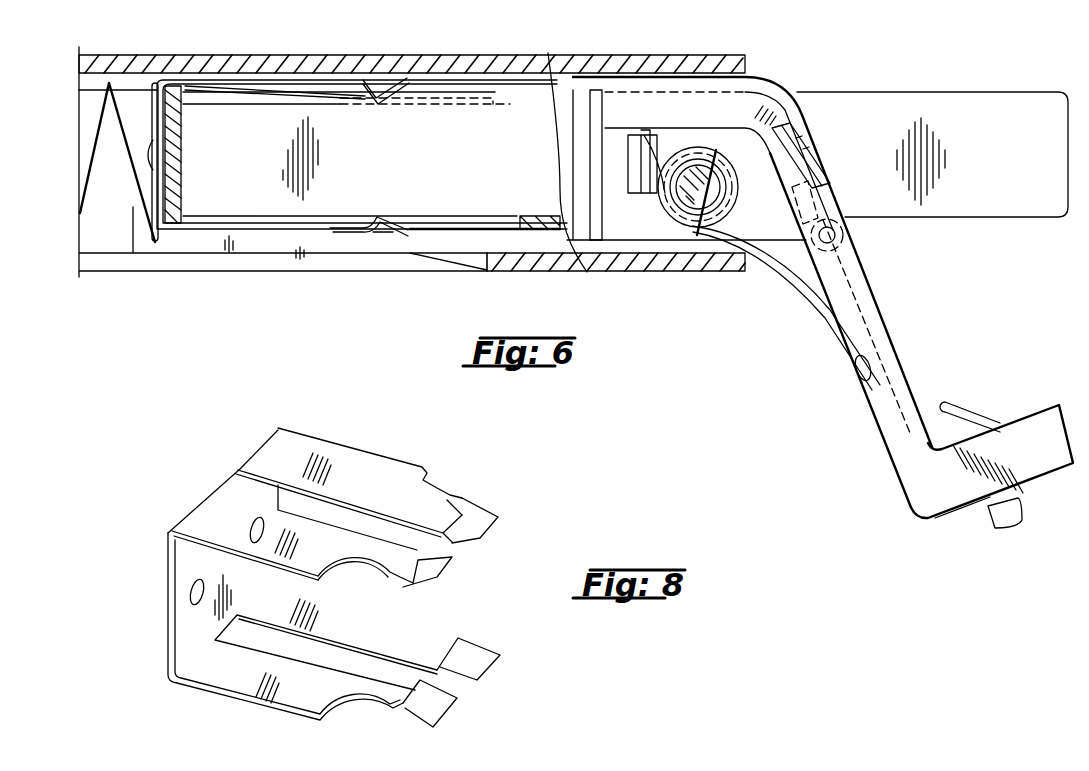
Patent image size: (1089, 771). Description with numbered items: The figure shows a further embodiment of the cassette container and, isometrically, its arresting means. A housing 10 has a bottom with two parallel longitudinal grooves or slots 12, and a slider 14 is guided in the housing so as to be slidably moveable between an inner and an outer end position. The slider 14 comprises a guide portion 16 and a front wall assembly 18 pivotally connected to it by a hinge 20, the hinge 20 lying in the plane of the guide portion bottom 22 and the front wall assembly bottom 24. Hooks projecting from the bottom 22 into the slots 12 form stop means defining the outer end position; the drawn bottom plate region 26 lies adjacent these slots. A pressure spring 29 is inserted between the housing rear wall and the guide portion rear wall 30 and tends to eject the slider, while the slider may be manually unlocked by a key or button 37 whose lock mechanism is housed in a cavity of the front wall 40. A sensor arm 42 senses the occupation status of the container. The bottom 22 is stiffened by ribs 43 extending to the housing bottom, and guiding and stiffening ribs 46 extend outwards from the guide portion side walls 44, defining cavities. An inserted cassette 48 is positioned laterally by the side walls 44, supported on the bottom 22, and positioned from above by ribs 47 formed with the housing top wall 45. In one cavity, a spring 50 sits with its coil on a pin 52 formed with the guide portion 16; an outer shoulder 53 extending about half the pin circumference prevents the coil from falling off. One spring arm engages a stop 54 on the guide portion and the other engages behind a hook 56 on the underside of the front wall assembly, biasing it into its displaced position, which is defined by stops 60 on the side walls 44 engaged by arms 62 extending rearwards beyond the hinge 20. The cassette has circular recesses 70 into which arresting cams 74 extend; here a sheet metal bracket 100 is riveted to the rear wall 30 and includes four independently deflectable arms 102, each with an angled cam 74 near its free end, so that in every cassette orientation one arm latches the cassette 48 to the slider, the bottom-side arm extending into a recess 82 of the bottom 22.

In FIG. 6, the housing 10 is at (668, 53).
In FIG. 6, the longitudinal grooves or slots 12 is at (207, 263).
In FIG. 6, the slider 14 is at (888, 480).
In FIG. 6, the guide portion 16 is at (752, 77).
In FIG. 6, the front wall assembly 18 is at (960, 515).
In FIG. 6, the hinge 20 is at (835, 237).
In FIG. 6, the bottom of guide portion 22 is at (533, 223).
In FIG. 6, the front wall assembly bottom 24 is at (883, 350).
In FIG. 6, the bottom plate wedge 26 is at (473, 267).
In FIG. 6, the pressure spring 29 is at (97, 137).
In FIG. 6, the guide portion rear wall 30 is at (178, 190).
In FIG. 6, the key or button 37 is at (1015, 510).
In FIG. 6, the front wall 40 is at (1033, 420).
In FIG. 6, the sensor arm 42 is at (947, 413).
In FIG. 6, the ribs 43 is at (148, 250).
In FIG. 6, the guide portion side walls 44 is at (567, 143).
In FIG. 6, the top wall 45 is at (133, 57).
In FIG. 6, the guiding and stiffening ribs 46 is at (598, 188).
In FIG. 6, the ribs 47 is at (87, 83).
In FIG. 6, the cassette 48 is at (885, 100).
In FIG. 6, the spring 50 is at (812, 278).
In FIG. 6, the pin 52 is at (720, 177).
In FIG. 6, the outer shoulder 53 is at (692, 157).
In FIG. 6, the stop 54 is at (633, 143).
In FIG. 6, the hook 56 is at (858, 370).
In FIG. 6, the stops 60 is at (797, 132).
In FIG. 6, the arms 62 is at (797, 165).
In FIG. 6, the circular depressions or recesses 70 is at (432, 103).
In FIG. 6, the arresting cams 74 is at (378, 105).
In FIG. 8, the arresting cams 74 is at (457, 543).
In FIG. 6, the recess 82 is at (458, 223).
In FIG. 6, the sheet metal bracket 100 is at (262, 232).
In FIG. 8, the sheet metal bracket 100 is at (247, 453).
In FIG. 6, the arms 102 is at (210, 80).
In FIG. 8, the arms 102 is at (388, 465).